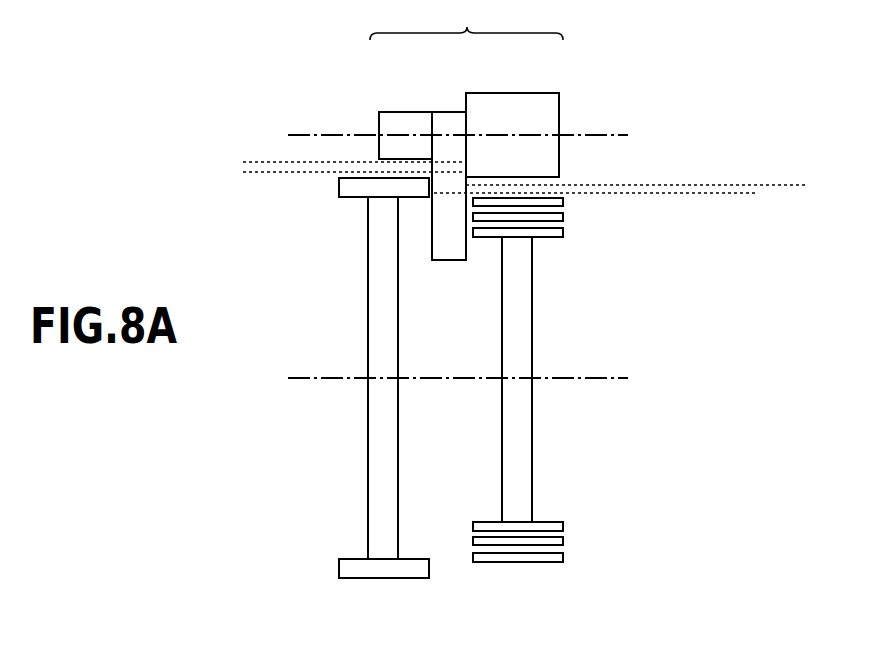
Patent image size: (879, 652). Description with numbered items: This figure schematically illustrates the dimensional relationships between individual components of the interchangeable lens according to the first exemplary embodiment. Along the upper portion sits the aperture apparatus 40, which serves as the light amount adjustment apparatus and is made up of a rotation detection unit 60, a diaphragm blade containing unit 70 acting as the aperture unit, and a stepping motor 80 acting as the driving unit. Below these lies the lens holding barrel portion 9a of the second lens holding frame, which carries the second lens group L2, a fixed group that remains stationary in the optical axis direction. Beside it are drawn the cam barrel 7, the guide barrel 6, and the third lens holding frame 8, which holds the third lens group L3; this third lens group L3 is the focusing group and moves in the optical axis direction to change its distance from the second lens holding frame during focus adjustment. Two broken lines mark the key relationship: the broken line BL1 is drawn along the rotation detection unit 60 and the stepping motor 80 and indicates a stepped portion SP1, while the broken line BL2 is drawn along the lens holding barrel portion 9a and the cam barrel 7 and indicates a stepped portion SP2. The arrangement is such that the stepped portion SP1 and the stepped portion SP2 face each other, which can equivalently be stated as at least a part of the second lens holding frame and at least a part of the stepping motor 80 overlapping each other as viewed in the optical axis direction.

The aperture apparatus 40 is at (466, 21).
The rotation detection unit 60 is at (393, 127).
The diaphragm blade containing unit 70 is at (449, 120).
The stepping motor 80 is at (561, 110).
The lens holding barrel portion 9a is at (350, 187).
The cam barrel 7 is at (563, 201).
The guide barrel 6 is at (563, 217).
The third lens holding frame 8 is at (563, 232).
The stepped portion SP1 is at (462, 192).
The stepped portion SP2 is at (427, 180).
The second lens group L2 is at (375, 280).
The third lens group L3 is at (523, 335).
The broken line BL1 is at (740, 183).
The broken line BL2 is at (735, 194).